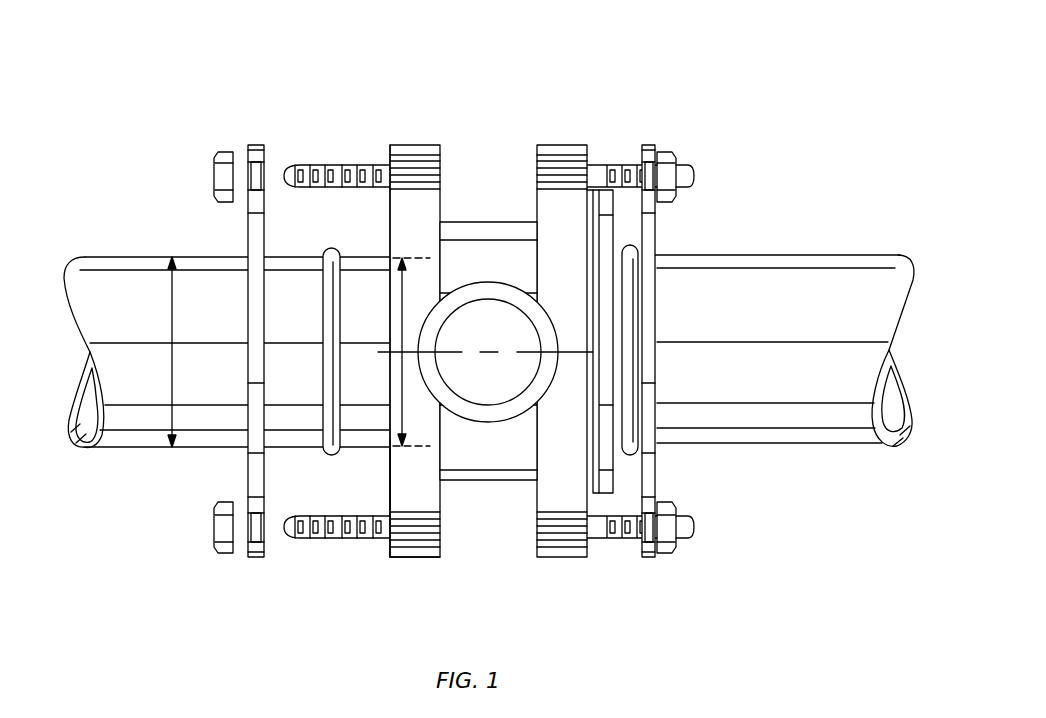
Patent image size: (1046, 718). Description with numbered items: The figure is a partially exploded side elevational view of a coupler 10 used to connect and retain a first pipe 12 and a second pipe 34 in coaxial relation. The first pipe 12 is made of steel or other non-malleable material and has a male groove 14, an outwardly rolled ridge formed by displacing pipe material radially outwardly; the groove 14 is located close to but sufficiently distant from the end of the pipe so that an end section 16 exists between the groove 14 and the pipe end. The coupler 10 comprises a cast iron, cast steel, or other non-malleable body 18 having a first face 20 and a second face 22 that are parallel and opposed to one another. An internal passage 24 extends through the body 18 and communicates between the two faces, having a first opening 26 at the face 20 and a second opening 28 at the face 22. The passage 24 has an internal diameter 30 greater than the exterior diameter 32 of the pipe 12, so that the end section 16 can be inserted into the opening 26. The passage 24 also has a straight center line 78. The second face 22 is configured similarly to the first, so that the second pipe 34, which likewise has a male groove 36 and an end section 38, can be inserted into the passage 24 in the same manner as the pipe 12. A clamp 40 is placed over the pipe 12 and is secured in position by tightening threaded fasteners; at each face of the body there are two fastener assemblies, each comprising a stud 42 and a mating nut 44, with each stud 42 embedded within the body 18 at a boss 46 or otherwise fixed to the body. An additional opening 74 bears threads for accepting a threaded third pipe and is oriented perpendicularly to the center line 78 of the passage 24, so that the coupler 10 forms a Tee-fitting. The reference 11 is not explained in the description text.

The coupler 10 is at (489, 341).
The flange face 11 is at (425, 236).
The first pipe 12 is at (108, 464).
The male groove 14 is at (331, 236).
The end section 16 is at (379, 394).
The body 18 is at (500, 196).
The first face 20 is at (384, 319).
The second face 22 is at (588, 153).
The internal passage 24 is at (501, 332).
The first opening 26 is at (368, 464).
The second opening 28 is at (670, 223).
The internal diameter 30 is at (402, 312).
The exterior diameter 32 is at (172, 335).
The second pipe 34 is at (797, 326).
The male groove 36 is at (628, 412).
The end section 38 is at (632, 468).
The clamp 40 is at (234, 236).
The stud 42 is at (338, 154).
The nut 44 is at (201, 178).
The boss 46 is at (405, 576).
The opening 74 is at (452, 378).
The center line 78 is at (527, 350).